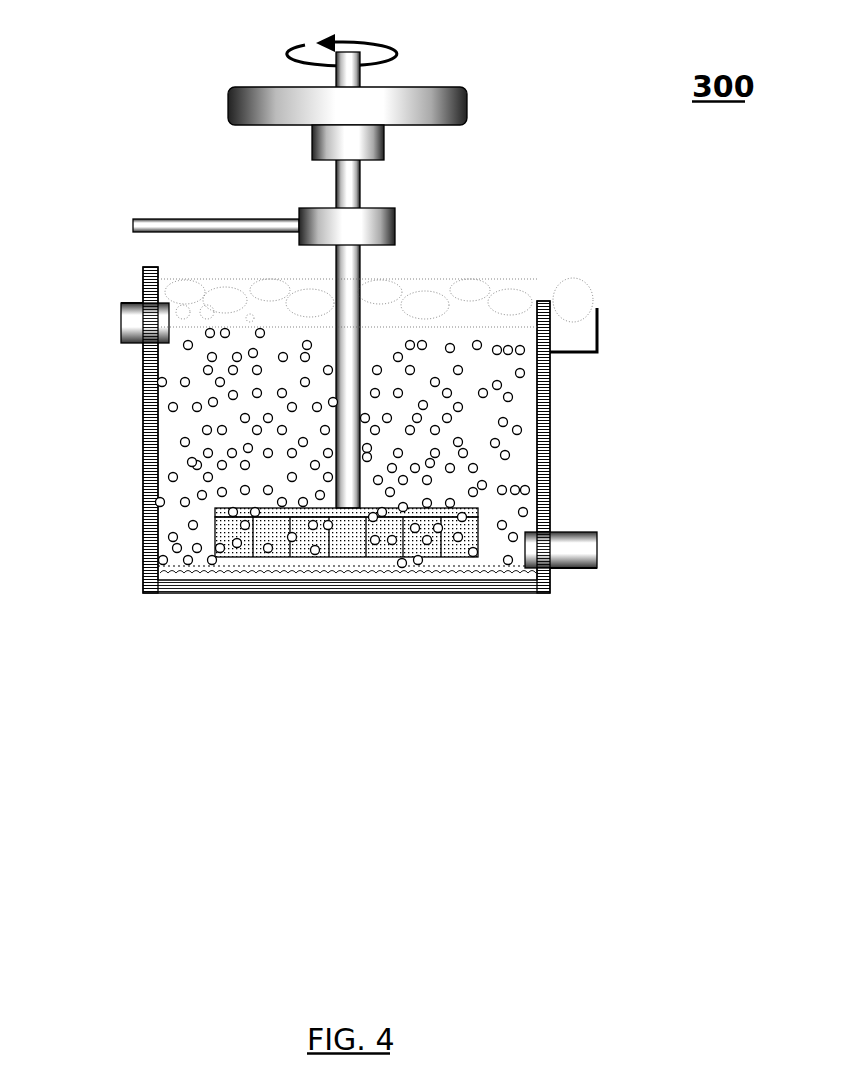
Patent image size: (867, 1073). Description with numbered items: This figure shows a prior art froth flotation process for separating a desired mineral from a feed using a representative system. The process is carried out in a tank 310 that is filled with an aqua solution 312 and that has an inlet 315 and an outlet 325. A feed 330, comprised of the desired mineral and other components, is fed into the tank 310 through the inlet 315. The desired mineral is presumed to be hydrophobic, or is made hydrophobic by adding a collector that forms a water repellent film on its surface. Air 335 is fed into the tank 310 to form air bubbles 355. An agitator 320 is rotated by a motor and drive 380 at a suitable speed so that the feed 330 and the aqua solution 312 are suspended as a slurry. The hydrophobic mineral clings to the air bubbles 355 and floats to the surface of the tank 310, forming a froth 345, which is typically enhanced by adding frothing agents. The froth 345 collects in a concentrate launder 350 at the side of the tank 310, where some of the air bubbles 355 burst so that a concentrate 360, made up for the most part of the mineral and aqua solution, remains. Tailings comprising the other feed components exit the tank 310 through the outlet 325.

The tank 310 is at (563, 431).
The aqua solution 312 is at (166, 425).
The inlet 315 is at (128, 290).
The agitator 320 is at (203, 520).
The outlet 325 is at (582, 584).
The feed 330 is at (110, 320).
The air 335 is at (121, 226).
The froth 345 is at (478, 291).
The concentrate launder 350 is at (612, 330).
The air bubbles 355 is at (176, 462).
The concentrate / tailings 360 is at (597, 550).
The motor and drive 380 is at (216, 104).